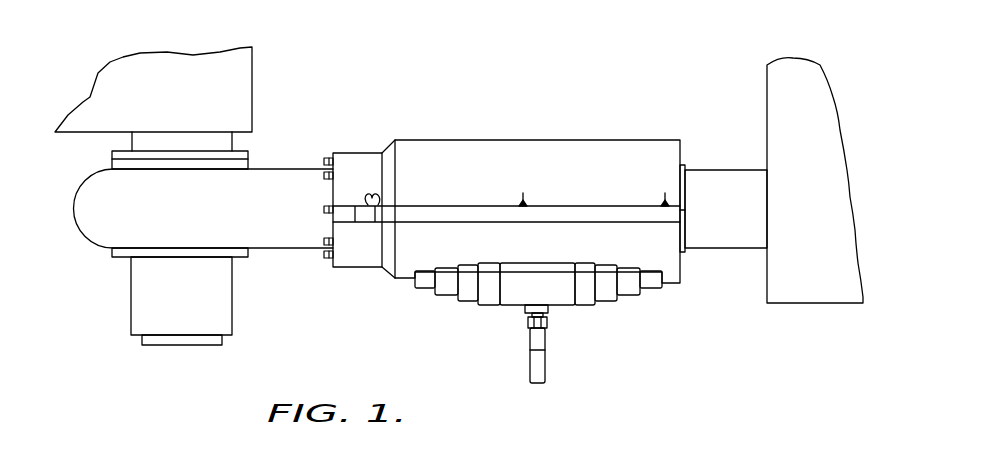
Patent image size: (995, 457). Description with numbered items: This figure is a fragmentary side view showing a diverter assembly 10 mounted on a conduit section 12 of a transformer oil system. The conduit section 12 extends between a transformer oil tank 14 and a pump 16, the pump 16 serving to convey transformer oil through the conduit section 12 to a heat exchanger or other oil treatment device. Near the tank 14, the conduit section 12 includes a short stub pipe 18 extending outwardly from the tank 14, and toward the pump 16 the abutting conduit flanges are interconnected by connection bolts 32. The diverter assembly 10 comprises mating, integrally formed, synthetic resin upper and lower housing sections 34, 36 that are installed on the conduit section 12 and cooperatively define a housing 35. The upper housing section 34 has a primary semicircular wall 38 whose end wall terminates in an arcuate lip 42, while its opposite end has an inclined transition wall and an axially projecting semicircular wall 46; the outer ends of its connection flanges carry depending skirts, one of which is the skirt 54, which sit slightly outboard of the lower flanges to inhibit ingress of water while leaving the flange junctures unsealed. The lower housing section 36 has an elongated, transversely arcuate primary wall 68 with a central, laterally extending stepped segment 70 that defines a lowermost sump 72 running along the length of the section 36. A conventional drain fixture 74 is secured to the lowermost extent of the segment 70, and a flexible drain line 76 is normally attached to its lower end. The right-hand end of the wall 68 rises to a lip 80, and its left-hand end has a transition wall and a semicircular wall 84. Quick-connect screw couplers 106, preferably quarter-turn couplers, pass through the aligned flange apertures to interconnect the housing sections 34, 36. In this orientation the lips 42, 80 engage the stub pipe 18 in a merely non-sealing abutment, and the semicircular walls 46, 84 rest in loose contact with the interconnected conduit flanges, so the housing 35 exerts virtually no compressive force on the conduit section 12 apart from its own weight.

The diverter assembly 10 is at (385, 62).
The conduit section 12 is at (728, 262).
The transformer oil tank 14 is at (815, 85).
The pump 16 is at (90, 223).
The stub pipe 18 is at (725, 180).
The connection bolts 32 is at (324, 209).
The upper housing section 34 is at (608, 132).
The housing 35 is at (533, 132).
The lower housing section 36 is at (440, 303).
The primary semicircular wall 38 is at (447, 150).
The arcuate lip 42 is at (683, 163).
The semicircular wall 46 is at (357, 158).
The depending skirt 54 is at (605, 219).
The primary wall 68 is at (413, 255).
The stepped segment 70 is at (610, 297).
The sump 72 is at (553, 293).
The drain fixture 74 is at (527, 312).
The flexible drain line 76 is at (543, 368).
The lip 80 is at (682, 253).
The semicircular wall 84 is at (347, 260).
The quick-connect screw couplers 106 is at (525, 193).